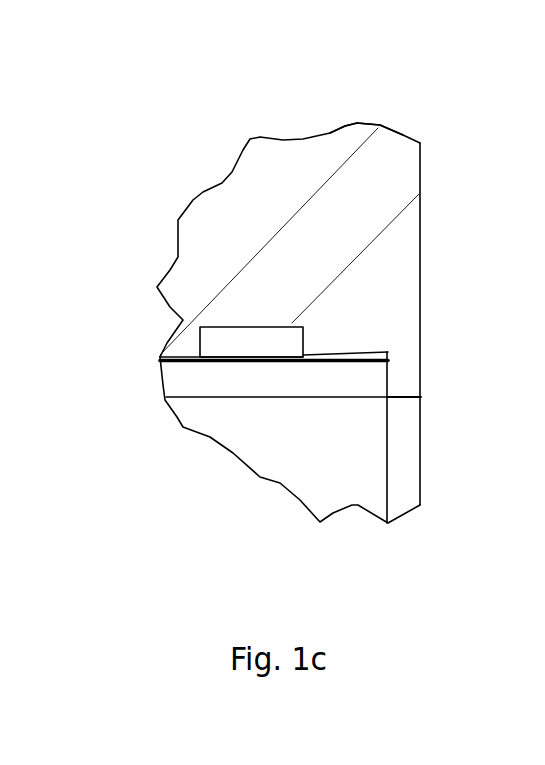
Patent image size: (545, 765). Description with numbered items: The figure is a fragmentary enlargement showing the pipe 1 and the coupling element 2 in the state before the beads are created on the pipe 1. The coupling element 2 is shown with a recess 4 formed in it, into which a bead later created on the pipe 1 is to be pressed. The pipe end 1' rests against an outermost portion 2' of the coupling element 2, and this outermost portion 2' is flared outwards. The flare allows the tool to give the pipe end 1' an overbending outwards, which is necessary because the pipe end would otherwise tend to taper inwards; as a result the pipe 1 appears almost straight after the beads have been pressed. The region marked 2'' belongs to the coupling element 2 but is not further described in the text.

The pipe 1 is at (261, 440).
The pipe end 1' is at (444, 437).
The coupling element 2 is at (328, 282).
The outermost portion of the coupling element 2' is at (394, 301).
The top surface of upper block 2'' is at (378, 84).
The recess 4 is at (215, 332).